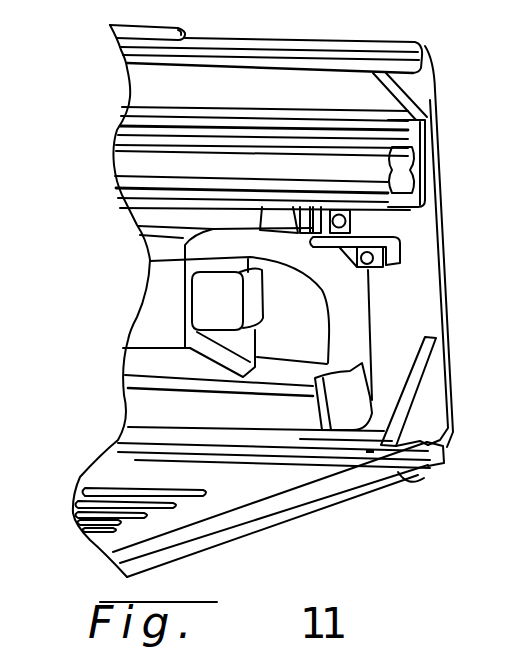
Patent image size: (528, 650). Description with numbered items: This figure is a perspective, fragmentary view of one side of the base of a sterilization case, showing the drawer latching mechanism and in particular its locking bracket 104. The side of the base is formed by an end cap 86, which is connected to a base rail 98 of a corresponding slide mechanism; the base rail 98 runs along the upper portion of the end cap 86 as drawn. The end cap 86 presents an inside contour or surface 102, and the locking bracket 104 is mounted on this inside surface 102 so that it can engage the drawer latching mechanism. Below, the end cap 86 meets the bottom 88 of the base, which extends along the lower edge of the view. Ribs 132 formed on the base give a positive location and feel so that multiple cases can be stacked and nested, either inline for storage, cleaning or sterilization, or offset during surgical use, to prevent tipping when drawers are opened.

The upper rail 98 is at (418, 120).
The mounting bracket 104 is at (400, 236).
The side flange 86 is at (441, 268).
The inner panel 102 is at (410, 305).
The end cap 132 is at (420, 475).
The lower rail 88 is at (270, 520).